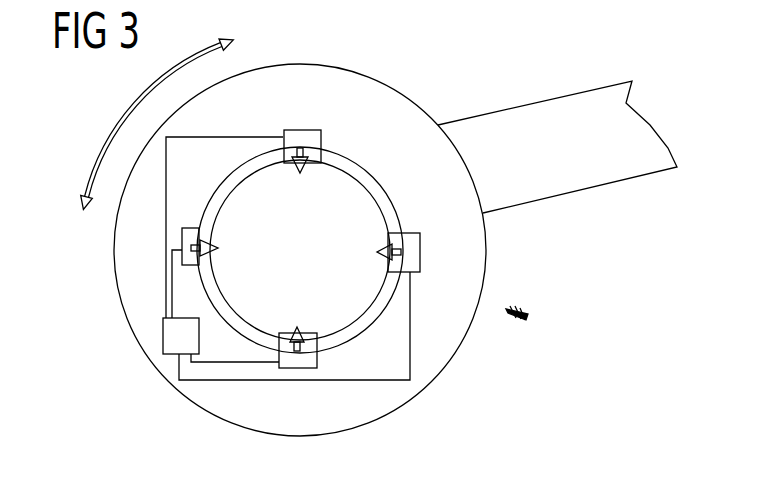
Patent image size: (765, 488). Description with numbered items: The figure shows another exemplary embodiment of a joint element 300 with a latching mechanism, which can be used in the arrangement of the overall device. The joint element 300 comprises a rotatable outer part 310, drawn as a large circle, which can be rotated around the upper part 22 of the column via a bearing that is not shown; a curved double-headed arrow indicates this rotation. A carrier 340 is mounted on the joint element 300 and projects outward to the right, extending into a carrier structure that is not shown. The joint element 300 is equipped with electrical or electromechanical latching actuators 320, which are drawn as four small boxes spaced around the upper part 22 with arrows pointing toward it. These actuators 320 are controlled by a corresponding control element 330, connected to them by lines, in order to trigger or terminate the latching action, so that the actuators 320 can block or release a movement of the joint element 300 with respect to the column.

The upper part 22 is at (332, 200).
The joint element 300 is at (527, 316).
The rotatable outer part 310 is at (120, 299).
The latching actuators 320 is at (297, 129).
The control element 330 is at (163, 343).
The carrier 340 is at (498, 110).